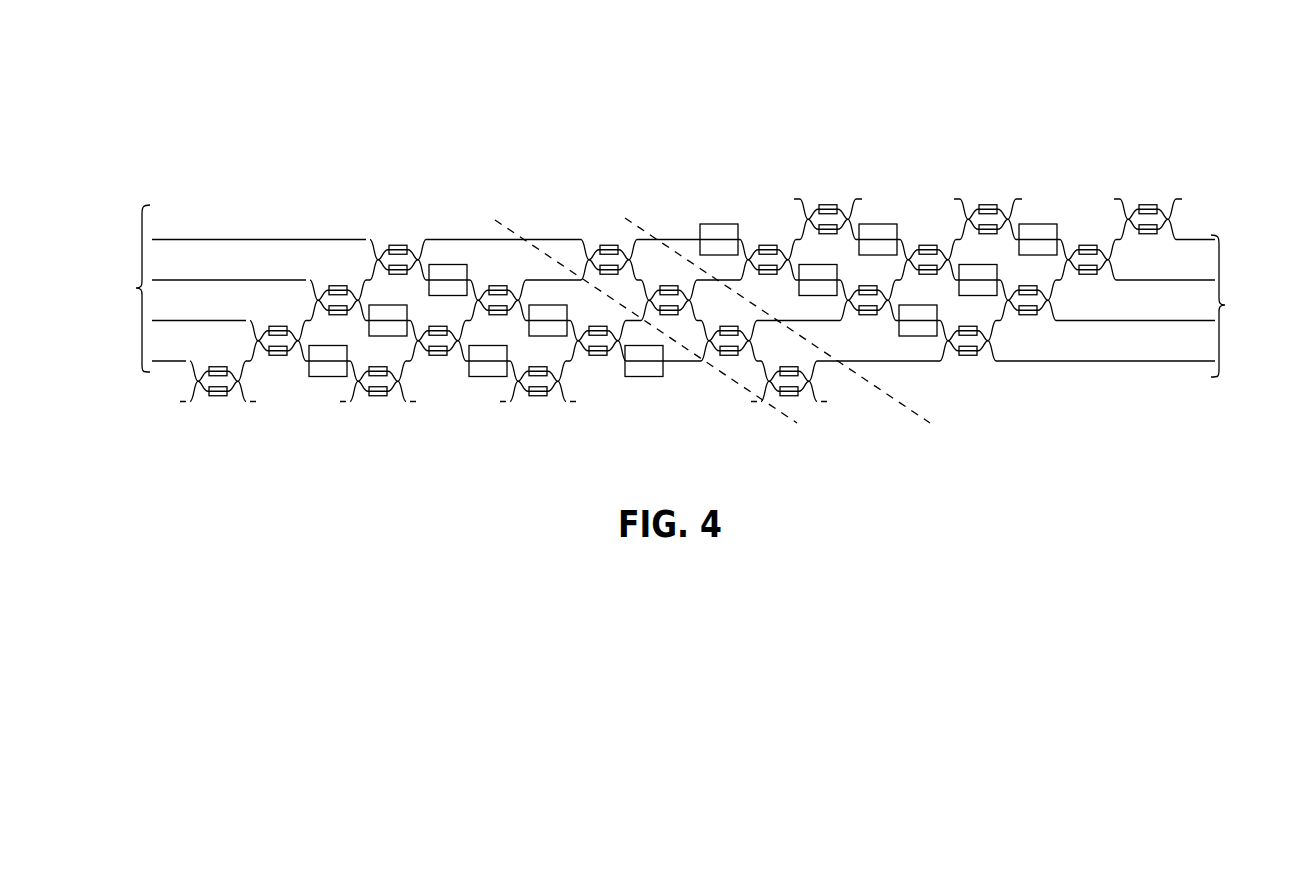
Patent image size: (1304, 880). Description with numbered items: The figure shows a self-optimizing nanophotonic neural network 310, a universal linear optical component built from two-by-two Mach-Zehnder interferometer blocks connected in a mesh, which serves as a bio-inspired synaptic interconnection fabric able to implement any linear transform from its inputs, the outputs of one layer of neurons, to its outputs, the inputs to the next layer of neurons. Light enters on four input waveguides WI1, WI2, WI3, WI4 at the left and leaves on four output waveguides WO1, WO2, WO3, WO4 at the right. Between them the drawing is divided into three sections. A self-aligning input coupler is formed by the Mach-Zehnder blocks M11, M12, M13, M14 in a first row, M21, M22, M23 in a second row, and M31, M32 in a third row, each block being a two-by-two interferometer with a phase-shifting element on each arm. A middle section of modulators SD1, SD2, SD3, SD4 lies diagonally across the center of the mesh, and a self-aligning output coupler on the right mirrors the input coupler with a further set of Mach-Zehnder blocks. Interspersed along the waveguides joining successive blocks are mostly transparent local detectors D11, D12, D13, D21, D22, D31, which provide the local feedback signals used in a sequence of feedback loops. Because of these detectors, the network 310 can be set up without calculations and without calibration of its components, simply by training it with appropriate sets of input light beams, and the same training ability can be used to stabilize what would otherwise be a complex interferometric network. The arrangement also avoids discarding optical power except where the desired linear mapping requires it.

The network 310 is at (653, 133).
The Mach-Zehnder interferometer block M11 is at (683, 302).
The Mach-Zehnder interferometer block M12 is at (683, 301).
The Mach-Zehnder interferometer modulator M13 is at (683, 301).
The Mach-Zehnder interferometer modulator M14 is at (683, 300).
The Mach-Zehnder interferometer modulator M21 is at (683, 301).
The Mach-Zehnder interferometer modulator M22 is at (683, 301).
The Mach-Zehnder interferometer modulator M23 is at (683, 300).
The Mach-Zehnder interferometer modulator M31 is at (683, 301).
The Mach-Zehnder interferometer modulator M32 is at (683, 300).
The singular value modulator SD1 is at (609, 251).
The singular value modulator SD2 is at (669, 292).
The singular value modulator SD3 is at (729, 332).
The singular value modulator SD4 is at (789, 373).
The local detector D11 is at (683, 301).
The local detector D12 is at (683, 301).
The detector D13 is at (683, 300).
The detector D21 is at (683, 301).
The detector D22 is at (683, 300).
The detector D31 is at (681, 300).
The input waveguide WI1 is at (259, 226).
The input waveguide WI2 is at (229, 267).
The input waveguide WI3 is at (199, 307).
The input waveguide WI4 is at (169, 348).
The output waveguide WO1 is at (1105, 375).
The output waveguide WO2 is at (1135, 335).
The output waveguide WO3 is at (1165, 294).
The output waveguide WO4 is at (1195, 254).